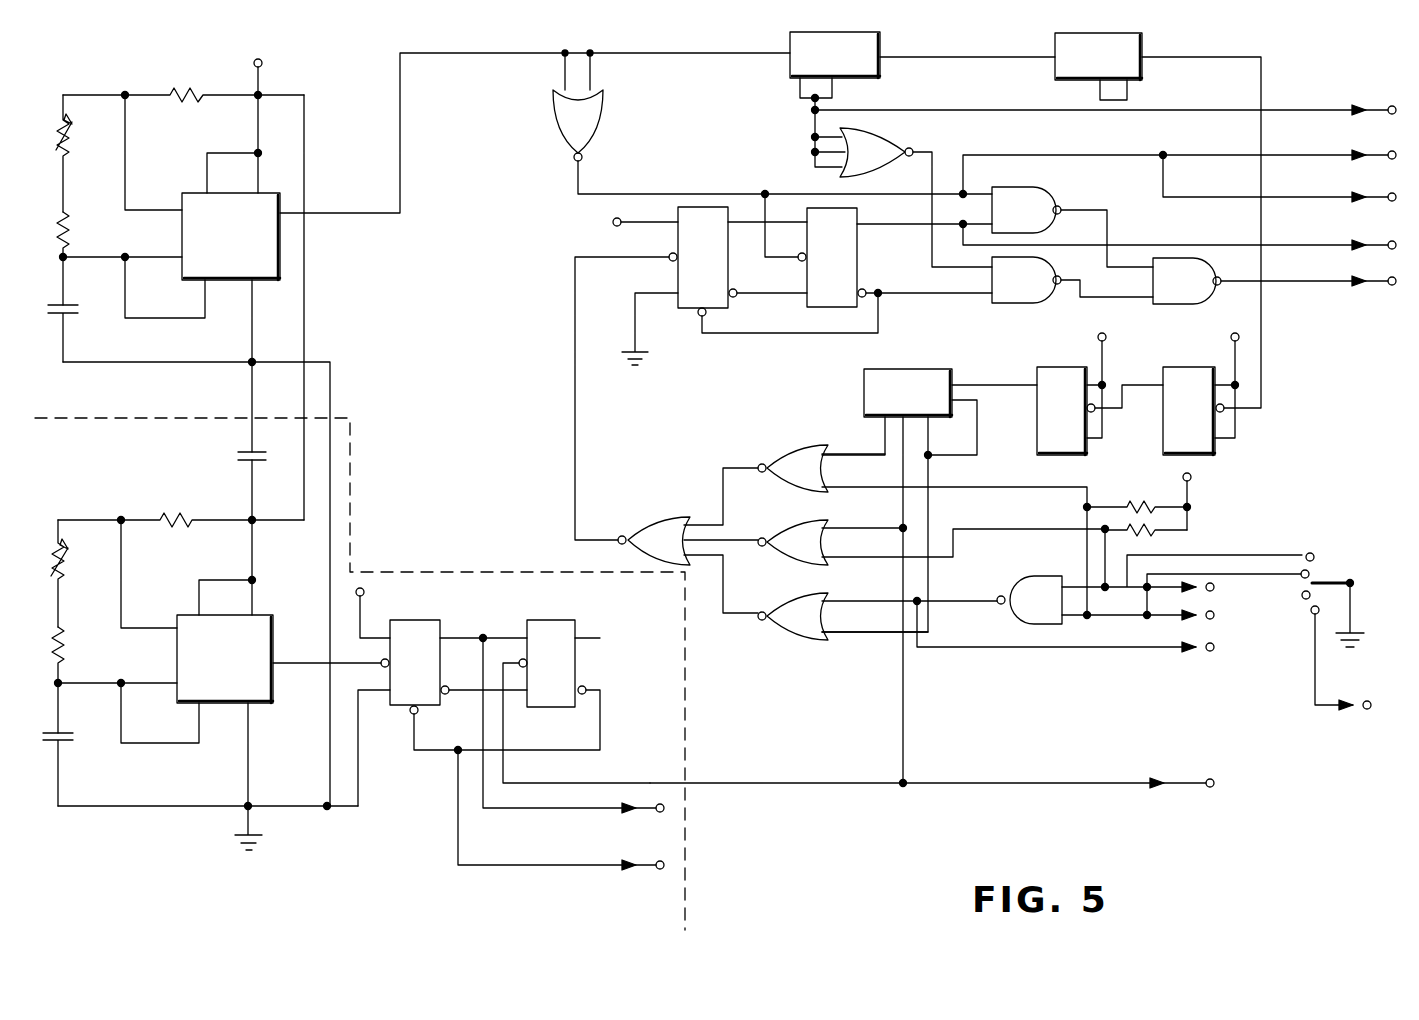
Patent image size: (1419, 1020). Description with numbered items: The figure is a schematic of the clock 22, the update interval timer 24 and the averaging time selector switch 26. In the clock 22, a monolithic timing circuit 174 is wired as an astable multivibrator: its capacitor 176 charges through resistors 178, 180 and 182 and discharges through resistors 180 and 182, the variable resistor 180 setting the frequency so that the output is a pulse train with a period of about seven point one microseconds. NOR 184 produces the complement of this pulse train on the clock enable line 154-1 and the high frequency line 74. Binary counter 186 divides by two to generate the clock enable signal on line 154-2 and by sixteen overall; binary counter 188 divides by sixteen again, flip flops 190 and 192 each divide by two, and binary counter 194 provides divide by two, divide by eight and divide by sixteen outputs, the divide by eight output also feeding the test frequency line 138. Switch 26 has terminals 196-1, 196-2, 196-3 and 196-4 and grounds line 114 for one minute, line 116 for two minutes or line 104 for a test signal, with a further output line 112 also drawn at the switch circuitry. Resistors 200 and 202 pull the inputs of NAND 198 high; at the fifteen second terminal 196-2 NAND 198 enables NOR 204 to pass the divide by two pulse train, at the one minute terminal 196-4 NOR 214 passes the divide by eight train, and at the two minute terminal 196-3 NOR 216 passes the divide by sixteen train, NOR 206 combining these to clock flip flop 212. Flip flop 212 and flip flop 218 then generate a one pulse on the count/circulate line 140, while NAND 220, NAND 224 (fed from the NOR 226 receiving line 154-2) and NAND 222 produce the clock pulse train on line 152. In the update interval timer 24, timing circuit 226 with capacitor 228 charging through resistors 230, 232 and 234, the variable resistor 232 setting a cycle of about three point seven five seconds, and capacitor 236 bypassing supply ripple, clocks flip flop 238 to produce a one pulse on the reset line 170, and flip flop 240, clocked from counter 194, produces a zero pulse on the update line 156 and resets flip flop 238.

The clock 22 is at (1050, 822).
The update interval timer 24 is at (332, 925).
The averaging time selector switch 26 is at (1344, 582).
The high frequency line 74 is at (1325, 197).
The line 104 is at (1325, 704).
The output terminal 112 is at (1203, 652).
The line 114 is at (1202, 590).
The line 116 is at (1202, 619).
The test frequency line 138 is at (1133, 782).
The count/circulate line 140 is at (1322, 245).
The line 152 is at (1309, 281).
The clock enable line 154-1 is at (1322, 155).
The clock enable line 154-2 is at (1322, 110).
The update line 156 is at (562, 868).
The reset line 170 is at (588, 812).
The monolithic timing circuit 174 is at (252, 252).
The capacitor 176 is at (66, 300).
The resistor 178 is at (182, 90).
The variable resistor 180 is at (68, 140).
The resistor 182 is at (70, 228).
The NOR 184 is at (598, 131).
The binary counter 186 is at (857, 65).
The binary counter 188 is at (1120, 65).
The flip flop 190 is at (1207, 441).
The flip flop 192 is at (1080, 441).
The binary counter 194 is at (928, 405).
The switch terminal 196-1 is at (1311, 614).
The fifteen second averaging interval switch terminal 196-2 is at (1302, 596).
The two minute averaging interval switch terminal 196-3 is at (1310, 570).
The one minute averaging interval switch terminal 196-4 is at (1311, 553).
The NAND 198 is at (1057, 610).
The resistor 200 is at (1150, 535).
The resistor 202 is at (1128, 506).
The NOR 204 is at (818, 627).
The NOR 206 is at (679, 552).
The flip flop 212 is at (722, 248).
The NOR 214 is at (818, 553).
The NOR 216 is at (818, 479).
The flip flop 218 is at (851, 248).
The NAND 220 is at (1034, 220).
The NAND 222 is at (1195, 291).
The NAND 224 is at (1034, 290).
The timing circuit / NOR 226 is at (246, 674).
The capacitor 228 is at (64, 730).
The resistor 230 is at (168, 514).
The variable resistor 232 is at (62, 580).
The resistor 234 is at (72, 640).
The capacitor 236 is at (244, 465).
The flip flop 238 is at (435, 660).
The flip flop 240 is at (570, 660).